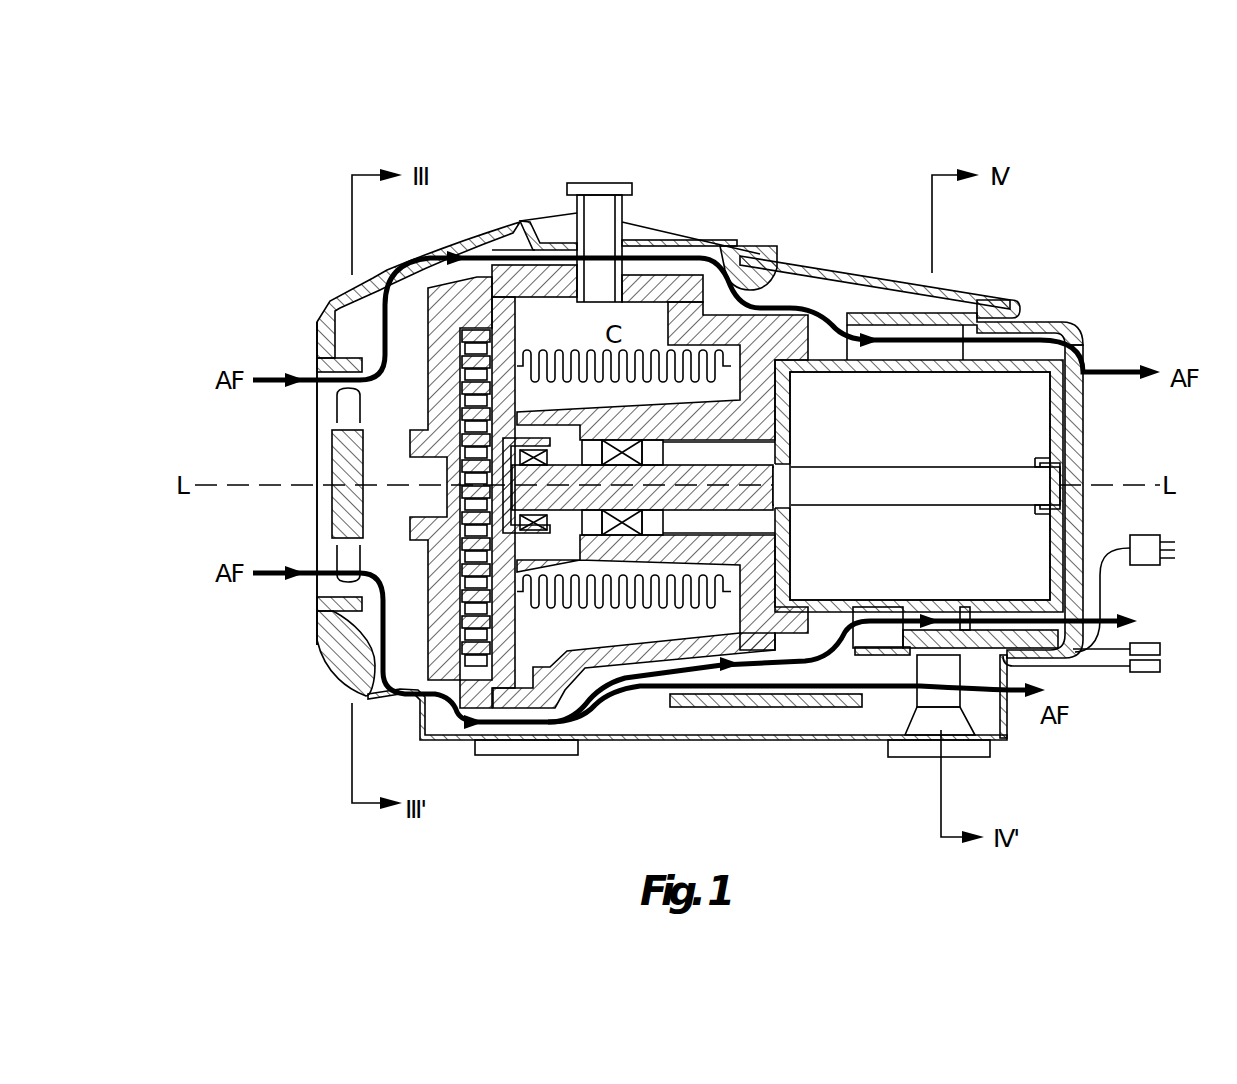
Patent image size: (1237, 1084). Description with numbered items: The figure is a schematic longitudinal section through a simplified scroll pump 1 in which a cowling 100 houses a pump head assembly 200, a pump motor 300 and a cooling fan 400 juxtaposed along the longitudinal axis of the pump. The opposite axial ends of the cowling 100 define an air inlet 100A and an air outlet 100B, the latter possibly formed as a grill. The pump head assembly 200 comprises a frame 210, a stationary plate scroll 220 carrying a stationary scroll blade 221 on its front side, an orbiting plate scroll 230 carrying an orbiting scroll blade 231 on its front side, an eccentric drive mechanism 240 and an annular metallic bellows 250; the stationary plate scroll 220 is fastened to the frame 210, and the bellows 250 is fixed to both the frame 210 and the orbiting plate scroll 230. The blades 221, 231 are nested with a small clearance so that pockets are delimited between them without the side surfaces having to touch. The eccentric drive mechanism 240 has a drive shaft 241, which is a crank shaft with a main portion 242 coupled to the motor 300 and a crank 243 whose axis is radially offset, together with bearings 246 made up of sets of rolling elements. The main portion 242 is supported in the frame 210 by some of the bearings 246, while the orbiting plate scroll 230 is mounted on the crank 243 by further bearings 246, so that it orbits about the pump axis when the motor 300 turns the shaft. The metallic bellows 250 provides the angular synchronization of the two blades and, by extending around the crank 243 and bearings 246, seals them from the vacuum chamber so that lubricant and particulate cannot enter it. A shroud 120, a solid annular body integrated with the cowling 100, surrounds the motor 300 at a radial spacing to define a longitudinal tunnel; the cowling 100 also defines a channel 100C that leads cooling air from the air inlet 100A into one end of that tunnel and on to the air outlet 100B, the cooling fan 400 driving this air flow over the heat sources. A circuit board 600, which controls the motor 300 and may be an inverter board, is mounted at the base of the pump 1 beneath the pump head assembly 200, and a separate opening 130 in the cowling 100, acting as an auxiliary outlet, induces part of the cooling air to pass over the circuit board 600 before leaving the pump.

The scroll pump 1 is at (736, 105).
The cowling 100 is at (832, 272).
The air inlet 100A is at (310, 592).
The air outlet 100B is at (1097, 428).
The channel 100C is at (793, 283).
The shroud 120 is at (957, 320).
The opening 130 is at (1007, 710).
The pump head assembly 200 is at (585, 668).
The frame 210 is at (763, 600).
The stationary plate scroll 220 is at (427, 342).
The stationary scroll blade 221 is at (368, 697).
The orbiting plate scroll 230 is at (513, 647).
The orbiting scroll blade 231 is at (465, 517).
The eccentric drive mechanism 240 is at (692, 513).
The drive shaft 241 is at (664, 499).
The main portion 242 is at (760, 458).
The crank 243 is at (575, 478).
The bearings 246 is at (522, 528).
The annular metallic bellows 250 is at (678, 608).
The pump motor 300 is at (987, 434).
The cooling fan 400 is at (325, 470).
The circuit board 600 is at (767, 703).